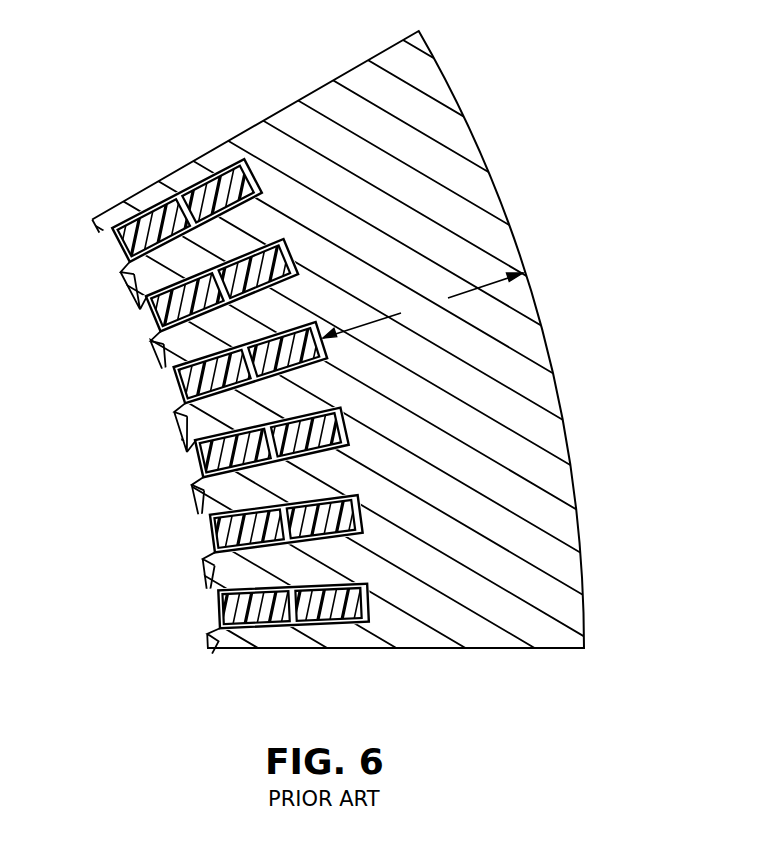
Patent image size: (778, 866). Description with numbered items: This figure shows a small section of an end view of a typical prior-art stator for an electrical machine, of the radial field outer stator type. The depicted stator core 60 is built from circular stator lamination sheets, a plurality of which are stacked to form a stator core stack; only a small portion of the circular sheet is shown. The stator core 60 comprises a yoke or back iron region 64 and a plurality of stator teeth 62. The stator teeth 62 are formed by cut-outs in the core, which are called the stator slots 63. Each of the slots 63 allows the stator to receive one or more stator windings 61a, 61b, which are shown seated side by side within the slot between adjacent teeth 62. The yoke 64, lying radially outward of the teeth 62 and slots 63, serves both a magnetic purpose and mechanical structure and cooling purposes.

The stator core 60 is at (282, 108).
The stator winding 61a is at (157, 227).
The stator winding 61b is at (227, 187).
The stator teeth 62 is at (135, 283).
The stator slots 63 is at (168, 400).
The yoke or back iron region 64 is at (423, 305).